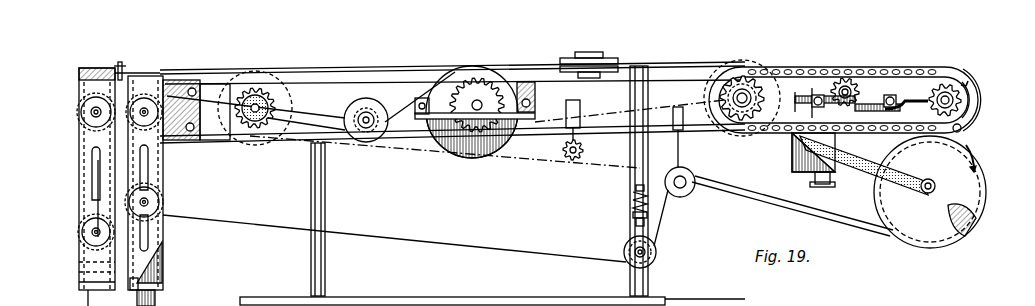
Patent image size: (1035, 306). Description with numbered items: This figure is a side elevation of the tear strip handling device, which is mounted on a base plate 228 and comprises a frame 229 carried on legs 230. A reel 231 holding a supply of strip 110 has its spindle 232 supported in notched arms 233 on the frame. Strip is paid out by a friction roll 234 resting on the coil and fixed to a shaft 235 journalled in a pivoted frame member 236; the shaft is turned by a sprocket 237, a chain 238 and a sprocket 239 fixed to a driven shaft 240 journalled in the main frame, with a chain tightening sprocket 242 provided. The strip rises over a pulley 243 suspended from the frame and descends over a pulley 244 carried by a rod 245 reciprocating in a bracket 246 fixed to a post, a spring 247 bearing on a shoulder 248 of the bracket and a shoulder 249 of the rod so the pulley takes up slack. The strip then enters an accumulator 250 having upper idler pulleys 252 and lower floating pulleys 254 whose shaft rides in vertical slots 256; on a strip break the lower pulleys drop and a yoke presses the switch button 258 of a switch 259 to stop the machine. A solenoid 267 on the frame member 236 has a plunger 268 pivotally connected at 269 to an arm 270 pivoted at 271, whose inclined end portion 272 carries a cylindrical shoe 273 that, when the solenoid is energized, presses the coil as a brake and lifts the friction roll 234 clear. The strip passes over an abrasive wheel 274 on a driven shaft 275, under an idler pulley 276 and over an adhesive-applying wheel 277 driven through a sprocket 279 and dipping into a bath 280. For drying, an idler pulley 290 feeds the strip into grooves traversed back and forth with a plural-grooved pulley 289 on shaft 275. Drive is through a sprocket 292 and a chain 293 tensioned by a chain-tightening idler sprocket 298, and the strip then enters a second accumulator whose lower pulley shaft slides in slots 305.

The strip 110 is at (437, 247).
The base plate 228 is at (512, 287).
The frame 229 is at (662, 80).
The legs 230 is at (328, 215).
The reel 231 is at (925, 240).
The spindle 232 is at (921, 187).
The notched arms 233 is at (968, 170).
The friction roll 234 is at (981, 100).
The shaft 235 is at (983, 112).
The frame member 236 is at (893, 80).
The sprocket 237 is at (950, 80).
The chain 238 is at (841, 80).
The sprocket 239 is at (775, 86).
The driven shaft 240 is at (745, 94).
The chain tightening sprocket 242 is at (852, 100).
The pulley 243 is at (696, 182).
The pulley 244 is at (656, 248).
The rod 245 is at (633, 213).
The bracket 246 is at (633, 203).
The spring 247 is at (633, 197).
The shoulder 248 is at (636, 188).
The shoulder 249 is at (636, 222).
The strip accumulator 250 is at (170, 188).
The idler pulleys 252 is at (147, 78).
The pulleys 254 is at (163, 205).
The vertical slots 256 is at (150, 240).
The switch button 258 is at (158, 268).
The switch 259 is at (157, 297).
The solenoid 267 is at (792, 158).
The plunger 268 is at (814, 183).
The pivotal connection 269 is at (812, 112).
The arm 270 is at (876, 98).
The pivotal mounting 271 is at (882, 115).
The inclined end portion 272 is at (930, 96).
The cylindrical shoe 273 is at (961, 130).
The abrasive wheel 274 is at (232, 143).
The driven shaft 275 is at (257, 106).
The idler pulley 276 is at (370, 100).
The adhesive-applying wheel 277 is at (486, 92).
The sprocket 279 is at (521, 80).
The bath 280 is at (472, 158).
The plural-grooved pulley 289 is at (245, 148).
The idler pulley 290 is at (606, 62).
The sprocket 292 is at (262, 150).
The chain 293 is at (528, 160).
The chain-tightening idler sprocket 298 is at (565, 168).
The slots 305 is at (93, 168).